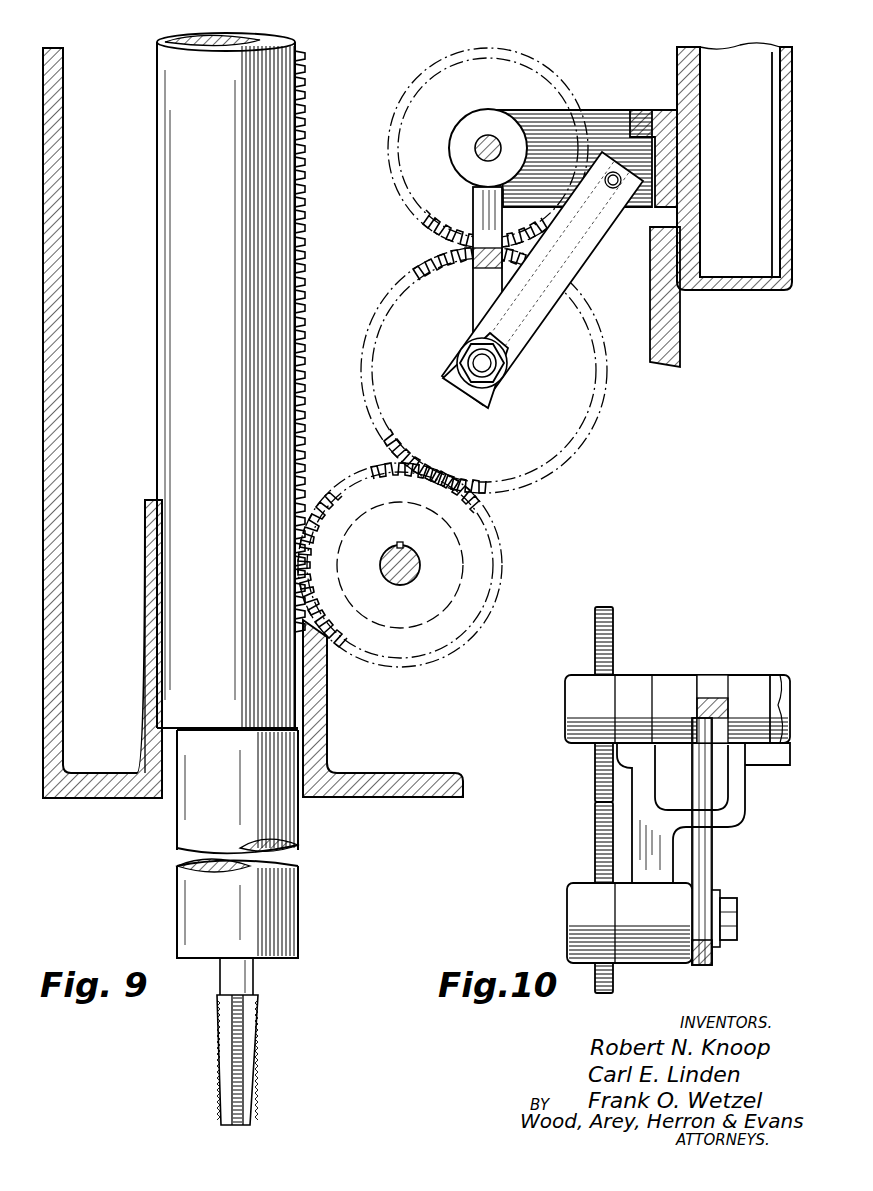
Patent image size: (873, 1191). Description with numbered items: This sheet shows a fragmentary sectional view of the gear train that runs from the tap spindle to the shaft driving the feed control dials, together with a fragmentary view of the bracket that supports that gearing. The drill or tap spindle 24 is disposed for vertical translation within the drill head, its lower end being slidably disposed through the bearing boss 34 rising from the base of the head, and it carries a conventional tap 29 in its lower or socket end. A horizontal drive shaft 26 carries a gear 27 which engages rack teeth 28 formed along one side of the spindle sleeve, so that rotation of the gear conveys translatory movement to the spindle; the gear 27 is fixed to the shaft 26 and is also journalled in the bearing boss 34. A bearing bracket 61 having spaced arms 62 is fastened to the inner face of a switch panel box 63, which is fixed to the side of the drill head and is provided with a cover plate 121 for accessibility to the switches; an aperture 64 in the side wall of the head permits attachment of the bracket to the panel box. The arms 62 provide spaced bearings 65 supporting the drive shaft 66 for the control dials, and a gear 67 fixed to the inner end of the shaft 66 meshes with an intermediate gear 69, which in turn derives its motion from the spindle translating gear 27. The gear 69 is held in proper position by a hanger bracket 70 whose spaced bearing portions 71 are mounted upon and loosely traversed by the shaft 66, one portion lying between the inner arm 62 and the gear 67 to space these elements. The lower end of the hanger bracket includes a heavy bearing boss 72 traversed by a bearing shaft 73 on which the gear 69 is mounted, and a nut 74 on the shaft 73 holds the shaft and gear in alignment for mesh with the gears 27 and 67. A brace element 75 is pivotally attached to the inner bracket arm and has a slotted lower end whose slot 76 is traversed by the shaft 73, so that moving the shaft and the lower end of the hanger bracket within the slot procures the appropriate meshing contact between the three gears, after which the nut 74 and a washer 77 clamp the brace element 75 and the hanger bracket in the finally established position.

In FIG. 9, the drill or tap spindle 24 is at (175, 408).
In FIG. 9, the drive shaft 26 is at (412, 572).
In FIG. 9, the gear 27 is at (494, 572).
In FIG. 9, the rack teeth 28 is at (303, 474).
In FIG. 9, the tap 29 is at (260, 1035).
In FIG. 9, the bearing boss 34 is at (322, 740).
In FIG. 9, the bearing bracket 61 is at (614, 107).
In FIG. 10, the bearing bracket 61 is at (772, 764).
In FIG. 9, the arms 62 is at (528, 118).
In FIG. 9, the switch panel box 63 is at (690, 50).
In FIG. 9, the aperture 64 is at (656, 222).
In FIG. 9, the bearings 65 is at (459, 152).
In FIG. 10, the bearings 65 is at (680, 682).
In FIG. 9, the drive shaft 66 is at (488, 137).
In FIG. 9, the gear 67 is at (548, 96).
In FIG. 10, the gear 67 is at (604, 612).
In FIG. 9, the intermediate gear 69 is at (505, 478).
In FIG. 10, the intermediate gear 69 is at (594, 863).
In FIG. 9, the hanger bracket 70 is at (482, 204).
In FIG. 10, the hanger bracket 70 is at (733, 822).
In FIG. 10, the bearing portions 71 is at (640, 680).
In FIG. 9, the bearing boss 72 is at (462, 354).
In FIG. 10, the bearing boss 72 is at (655, 955).
In FIG. 9, the bearing shaft 73 is at (492, 370).
In FIG. 9, the nut 74 is at (498, 360).
In FIG. 10, the nut 74 is at (733, 902).
In FIG. 9, the brace element 75 is at (566, 270).
In FIG. 10, the brace element 75 is at (712, 870).
In FIG. 9, the slot 76 is at (470, 400).
In FIG. 10, the slot 76 is at (705, 963).
In FIG. 9, the washer 77 is at (498, 392).
In FIG. 10, the washer 77 is at (720, 944).
In FIG. 9, the cover plate 121 is at (782, 228).